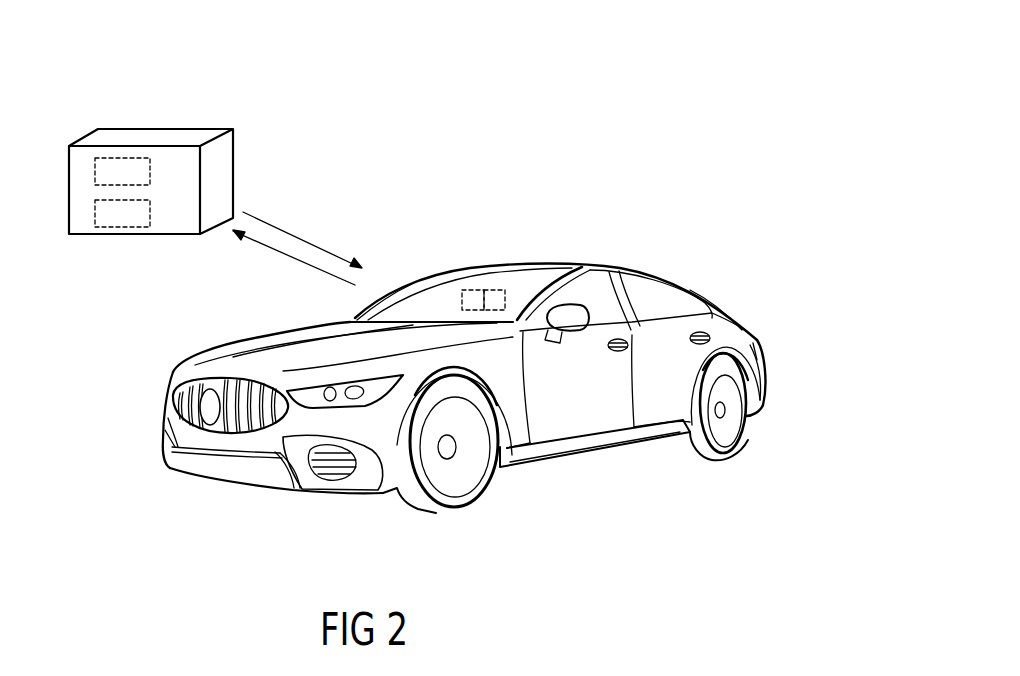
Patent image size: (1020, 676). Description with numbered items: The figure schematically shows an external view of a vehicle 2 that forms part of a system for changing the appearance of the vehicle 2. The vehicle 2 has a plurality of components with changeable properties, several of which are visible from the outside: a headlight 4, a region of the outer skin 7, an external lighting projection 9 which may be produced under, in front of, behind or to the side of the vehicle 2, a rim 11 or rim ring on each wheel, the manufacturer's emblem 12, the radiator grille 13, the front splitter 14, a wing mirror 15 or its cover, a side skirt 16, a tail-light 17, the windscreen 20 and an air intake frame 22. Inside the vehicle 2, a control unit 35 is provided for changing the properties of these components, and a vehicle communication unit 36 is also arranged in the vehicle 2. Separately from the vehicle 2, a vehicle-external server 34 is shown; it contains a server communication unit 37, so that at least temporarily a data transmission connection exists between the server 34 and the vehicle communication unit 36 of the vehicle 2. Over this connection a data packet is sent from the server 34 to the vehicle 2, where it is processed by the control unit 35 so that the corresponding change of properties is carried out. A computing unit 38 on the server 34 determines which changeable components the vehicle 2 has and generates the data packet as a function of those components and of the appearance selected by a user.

The vehicle 2 is at (660, 236).
The headlight 4 is at (322, 390).
The outer skin 7 is at (723, 320).
The external lighting projection 9 is at (623, 457).
The rim 11 is at (452, 476).
The manufacturer's emblem 12 is at (208, 398).
The radiator grille 13 is at (252, 387).
The front splitter 14 is at (170, 457).
The wing mirror 15 is at (578, 310).
The side skirt 16 is at (562, 448).
The tail-light 17 is at (760, 345).
The windscreen 20 is at (417, 303).
The air intake frame 22 is at (303, 473).
The vehicle-external server 34 is at (110, 137).
The control unit 35 is at (470, 290).
The vehicle communication unit 36 is at (497, 288).
The server communication unit 37 is at (135, 163).
The computing unit 38 is at (117, 220).